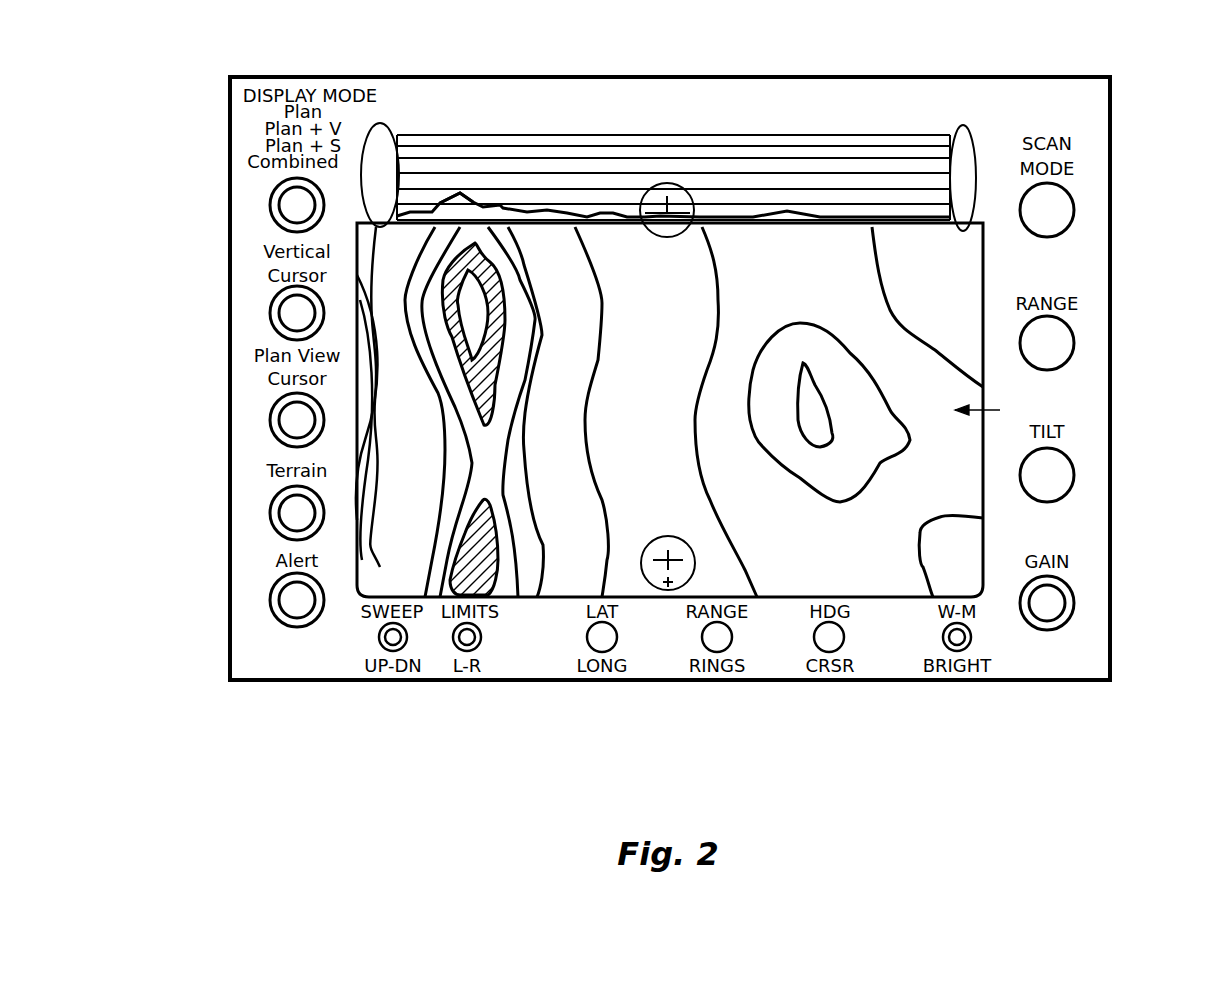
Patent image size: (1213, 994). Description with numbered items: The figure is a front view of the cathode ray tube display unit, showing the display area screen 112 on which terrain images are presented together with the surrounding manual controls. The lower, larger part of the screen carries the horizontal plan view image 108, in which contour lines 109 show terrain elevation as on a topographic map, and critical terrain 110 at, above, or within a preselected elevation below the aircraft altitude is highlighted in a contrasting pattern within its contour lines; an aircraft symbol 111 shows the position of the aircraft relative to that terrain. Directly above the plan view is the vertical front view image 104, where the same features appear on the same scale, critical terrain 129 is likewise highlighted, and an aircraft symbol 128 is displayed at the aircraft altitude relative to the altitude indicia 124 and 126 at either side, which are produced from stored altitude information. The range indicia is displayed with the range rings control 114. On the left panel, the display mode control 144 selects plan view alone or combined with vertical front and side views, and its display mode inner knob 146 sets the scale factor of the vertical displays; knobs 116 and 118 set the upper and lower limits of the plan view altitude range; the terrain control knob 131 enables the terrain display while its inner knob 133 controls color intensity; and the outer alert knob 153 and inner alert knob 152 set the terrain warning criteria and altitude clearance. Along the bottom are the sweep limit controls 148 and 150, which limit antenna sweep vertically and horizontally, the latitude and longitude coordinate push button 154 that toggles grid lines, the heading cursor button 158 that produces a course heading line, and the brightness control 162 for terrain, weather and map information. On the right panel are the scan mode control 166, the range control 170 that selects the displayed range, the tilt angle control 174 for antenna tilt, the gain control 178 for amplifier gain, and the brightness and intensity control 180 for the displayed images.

The vertical front view image 104 is at (823, 217).
The horizontal plan view image 108 is at (380, 393).
The contour lines 109 is at (740, 540).
The critical terrain 110 is at (503, 597).
The aircraft symbol 111 is at (653, 593).
The display area screen 112 is at (1000, 410).
The range indicia control 114 is at (745, 645).
The upper altitude limit knob 116 is at (234, 325).
The lower altitude limit knob 118 is at (292, 318).
The altitude indicia 124 is at (383, 123).
The altitude indicia 126 is at (963, 125).
The aircraft symbol 128 is at (667, 183).
The critical terrain 129 is at (460, 193).
The terrain control knob 131 is at (280, 520).
The terrain control inner knob 133 is at (238, 508).
The display mode control 144 is at (238, 206).
The display mode inner knob 146 is at (285, 215).
The sweep limit control 148 is at (380, 640).
The sweep limit control 150 is at (480, 645).
The alert knob 152 is at (240, 650).
The outer alert knob 153 is at (300, 627).
The latitude and longitude coordinate push button 154 is at (610, 645).
The heading cursor button 158 is at (835, 640).
The brightness control 162 is at (975, 640).
The scan mode control 166 is at (1060, 203).
The range control 170 is at (1060, 335).
The tilt angle control 174 is at (1060, 468).
The gain control 178 is at (1100, 605).
The brightness and intensity control 180 is at (1065, 610).